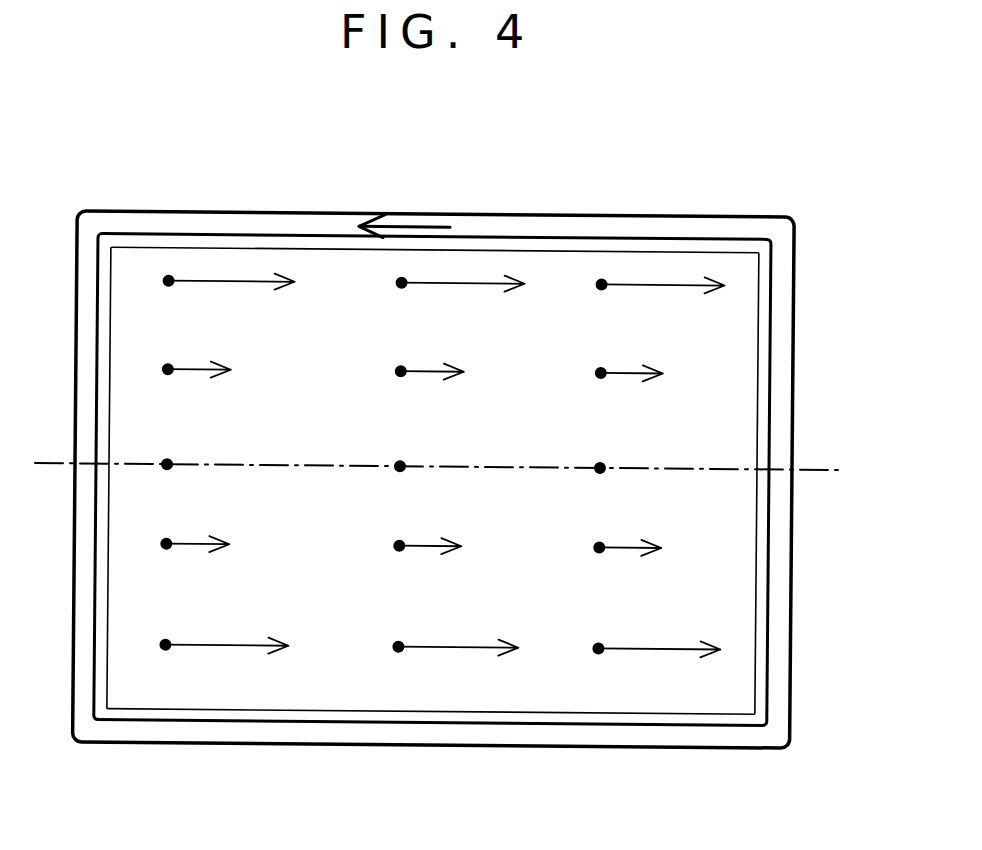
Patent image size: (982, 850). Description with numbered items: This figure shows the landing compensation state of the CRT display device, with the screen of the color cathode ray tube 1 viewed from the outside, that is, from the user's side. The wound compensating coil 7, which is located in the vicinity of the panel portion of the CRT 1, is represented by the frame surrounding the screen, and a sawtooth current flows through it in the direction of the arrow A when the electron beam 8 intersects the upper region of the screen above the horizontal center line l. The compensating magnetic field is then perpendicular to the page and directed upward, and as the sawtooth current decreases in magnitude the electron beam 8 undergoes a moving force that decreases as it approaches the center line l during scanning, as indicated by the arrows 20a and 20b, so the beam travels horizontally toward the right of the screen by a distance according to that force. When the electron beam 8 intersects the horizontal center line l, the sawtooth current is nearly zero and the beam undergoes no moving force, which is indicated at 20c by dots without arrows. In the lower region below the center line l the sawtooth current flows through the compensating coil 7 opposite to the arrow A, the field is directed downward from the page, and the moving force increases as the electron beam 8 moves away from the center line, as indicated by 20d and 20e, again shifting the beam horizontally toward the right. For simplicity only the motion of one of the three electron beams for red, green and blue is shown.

The color cathode ray tube 1 is at (740, 598).
The wound compensating coil 7 is at (782, 313).
The electron beam 8 is at (396, 290).
The moving force on the electron beam 20a is at (472, 287).
The moving force on the electron beam 20b is at (427, 373).
The moving force on the electron beam 20c is at (408, 472).
The moving force on the electron beam 20d is at (430, 552).
The moving force on the electron beam 20e is at (462, 653).
The arrow indicating current direction A is at (430, 225).
The horizontal center line l is at (455, 471).